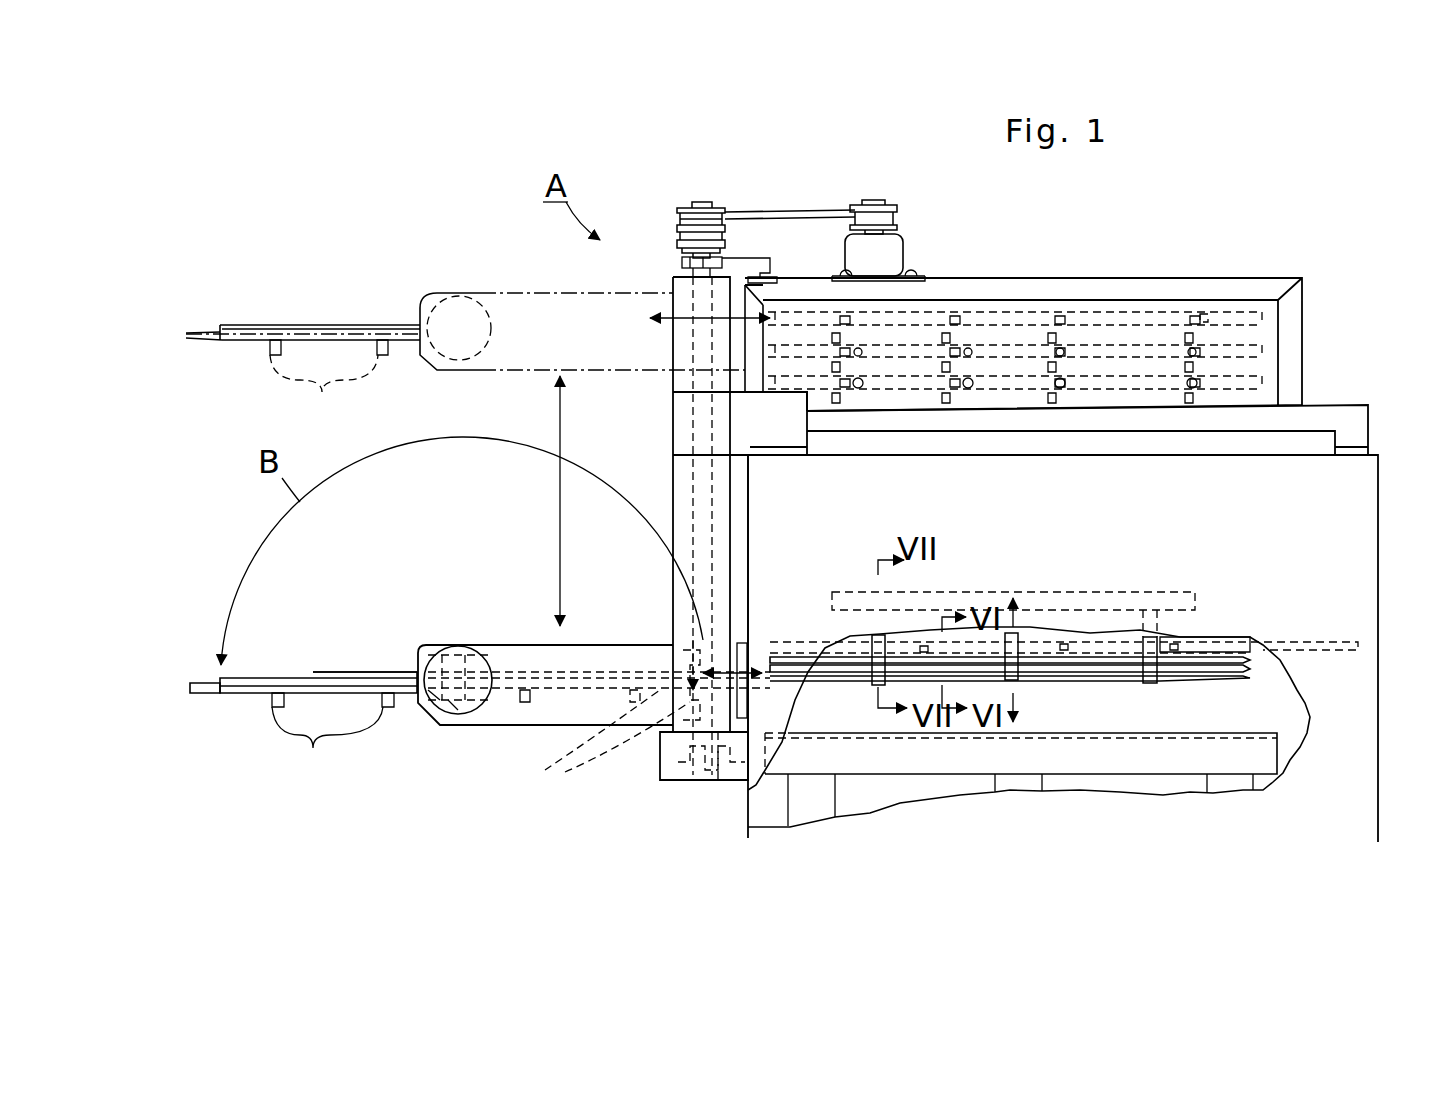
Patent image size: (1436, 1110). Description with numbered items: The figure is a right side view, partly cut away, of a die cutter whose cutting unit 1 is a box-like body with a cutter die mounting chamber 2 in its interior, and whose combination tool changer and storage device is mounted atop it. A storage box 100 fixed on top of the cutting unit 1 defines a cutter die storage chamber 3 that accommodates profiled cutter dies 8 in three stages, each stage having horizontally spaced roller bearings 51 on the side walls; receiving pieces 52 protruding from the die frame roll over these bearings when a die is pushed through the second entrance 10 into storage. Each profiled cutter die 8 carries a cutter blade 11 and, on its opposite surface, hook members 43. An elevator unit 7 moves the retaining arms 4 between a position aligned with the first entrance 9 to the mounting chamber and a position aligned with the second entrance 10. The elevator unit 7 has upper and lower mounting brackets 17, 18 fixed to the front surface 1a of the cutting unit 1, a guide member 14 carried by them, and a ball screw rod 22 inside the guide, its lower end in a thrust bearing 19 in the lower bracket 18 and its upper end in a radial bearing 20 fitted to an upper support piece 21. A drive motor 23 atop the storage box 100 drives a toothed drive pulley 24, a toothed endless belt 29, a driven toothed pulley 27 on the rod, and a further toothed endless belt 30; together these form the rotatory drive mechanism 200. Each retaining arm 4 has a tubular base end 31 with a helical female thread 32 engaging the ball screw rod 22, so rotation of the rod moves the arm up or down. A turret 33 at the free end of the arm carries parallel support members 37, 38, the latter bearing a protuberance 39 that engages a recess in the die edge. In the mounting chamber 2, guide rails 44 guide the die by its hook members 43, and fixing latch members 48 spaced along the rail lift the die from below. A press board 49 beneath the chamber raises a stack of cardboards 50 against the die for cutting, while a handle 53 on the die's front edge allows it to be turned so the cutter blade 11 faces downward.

The cutting unit 1 is at (1355, 512).
The front surface of the cutting unit 1a is at (750, 546).
The cutter die mounting chamber 2 is at (1270, 677).
The cutter die storage chamber 3 is at (1282, 326).
The retaining arm 4 is at (505, 293).
The elevator unit 7 is at (656, 440).
The profiled cutter die 8 is at (305, 326).
The first entrance 9 is at (740, 640).
The second entrance 10 is at (745, 368).
The cutter blade 11 is at (392, 672).
The guide member 14 is at (750, 506).
The upper mounting bracket 17 is at (682, 440).
The lower mounting bracket 18 is at (660, 792).
The thrust bearing 19 is at (660, 758).
The radial bearing 20 is at (735, 277).
The upper support piece 21 is at (682, 263).
The ball screw rod 22 is at (693, 508).
The drive motor 23 is at (906, 252).
The toothed drive pulley 24 is at (896, 207).
The driven toothed pulley 27 is at (722, 208).
The toothed endless belt 29 is at (806, 212).
The toothed endless belt 30 is at (682, 240).
The base end 31 is at (742, 762).
The helical female thread 32 is at (608, 746).
The turret 33 is at (490, 320).
The support member 37 is at (446, 650).
The support member 38 is at (430, 705).
The protuberance 39 is at (452, 705).
The hook member 43 is at (1225, 262).
The guide rail 44 is at (1257, 643).
The fixing latch member 48 is at (874, 686).
The press board 49 is at (1183, 753).
The stack of cardboards 50 is at (1098, 740).
The roller bearing 51 is at (848, 316).
The receiving piece 52 is at (1240, 300).
The handle 53 is at (218, 694).
The storage box 100 is at (1060, 278).
The rotatory drive mechanism 200 is at (838, 202).